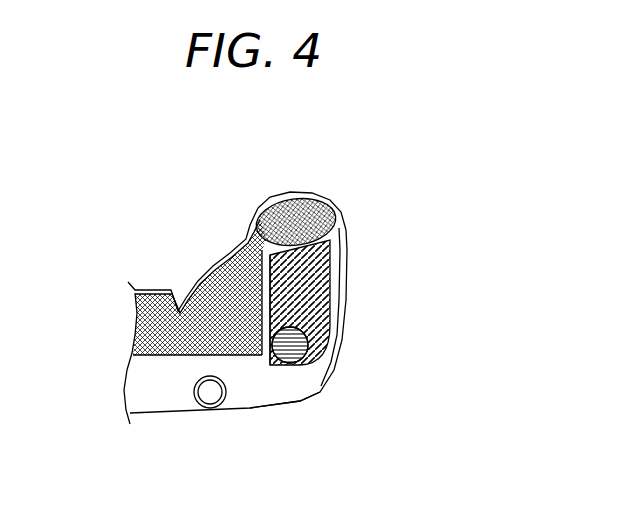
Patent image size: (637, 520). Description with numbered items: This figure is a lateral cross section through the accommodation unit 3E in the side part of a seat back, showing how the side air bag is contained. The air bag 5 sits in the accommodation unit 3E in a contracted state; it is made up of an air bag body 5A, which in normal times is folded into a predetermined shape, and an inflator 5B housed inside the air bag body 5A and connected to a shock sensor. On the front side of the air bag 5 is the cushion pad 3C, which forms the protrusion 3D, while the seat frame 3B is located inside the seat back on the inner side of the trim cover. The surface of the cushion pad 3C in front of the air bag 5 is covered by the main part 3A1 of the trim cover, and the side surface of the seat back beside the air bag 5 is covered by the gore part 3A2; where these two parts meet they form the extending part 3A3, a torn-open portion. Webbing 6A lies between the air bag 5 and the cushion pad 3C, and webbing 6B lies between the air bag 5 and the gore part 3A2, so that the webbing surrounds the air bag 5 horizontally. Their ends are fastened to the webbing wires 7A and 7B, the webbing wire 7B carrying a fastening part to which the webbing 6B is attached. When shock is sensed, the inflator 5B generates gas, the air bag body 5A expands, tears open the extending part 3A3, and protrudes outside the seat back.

The seat frame 3B is at (222, 407).
The cushion pad 3C is at (190, 282).
The protrusion 3D is at (284, 190).
The air bag accommodation unit 3E is at (263, 322).
The main part 3A1 is at (327, 197).
The gore part 3A2 is at (344, 268).
The extending part 3A3 is at (340, 219).
The air bag 5 is at (368, 318).
The air bag body 5A is at (333, 310).
The inflator 5B is at (432, 322).
The webbing 6A is at (253, 210).
The webbing 6B is at (341, 288).
The webbing wire 7A is at (233, 232).
The webbing wire 7B is at (295, 370).